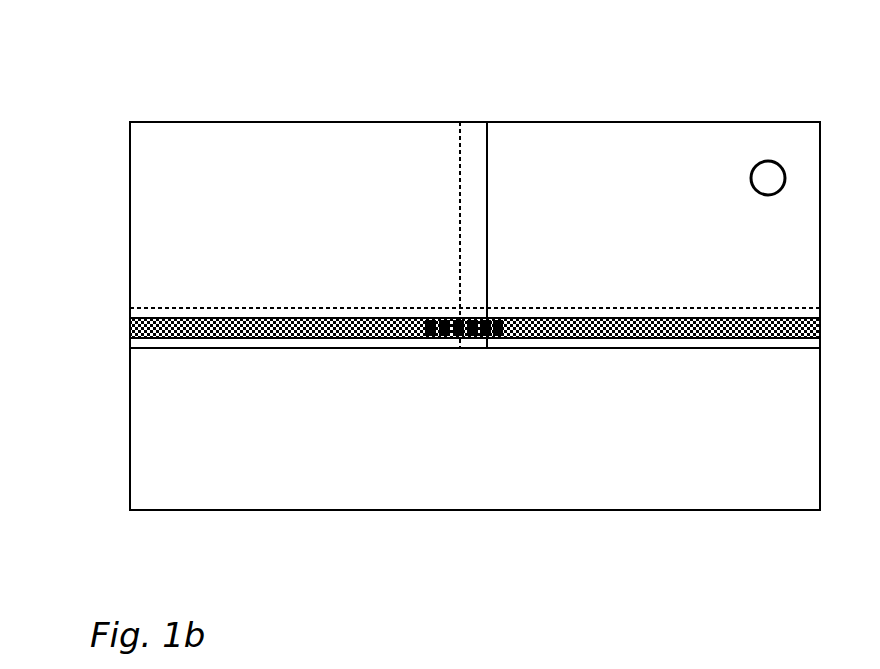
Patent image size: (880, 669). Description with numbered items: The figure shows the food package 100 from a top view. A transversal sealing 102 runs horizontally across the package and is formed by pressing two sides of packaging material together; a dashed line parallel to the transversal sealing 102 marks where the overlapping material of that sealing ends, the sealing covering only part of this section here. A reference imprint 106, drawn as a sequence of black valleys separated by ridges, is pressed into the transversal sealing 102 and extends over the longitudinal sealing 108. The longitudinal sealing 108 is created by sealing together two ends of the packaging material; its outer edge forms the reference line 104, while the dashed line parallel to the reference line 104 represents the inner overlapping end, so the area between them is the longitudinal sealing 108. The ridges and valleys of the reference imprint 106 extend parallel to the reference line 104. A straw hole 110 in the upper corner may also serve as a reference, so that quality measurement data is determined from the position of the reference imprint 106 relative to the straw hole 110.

The food package 100 is at (40, 137).
The transversal sealing 102 is at (198, 330).
The reference line 104 is at (482, 144).
The reference imprint 106 is at (422, 318).
The longitudinal sealing 108 is at (473, 242).
The straw hole 110 is at (780, 164).